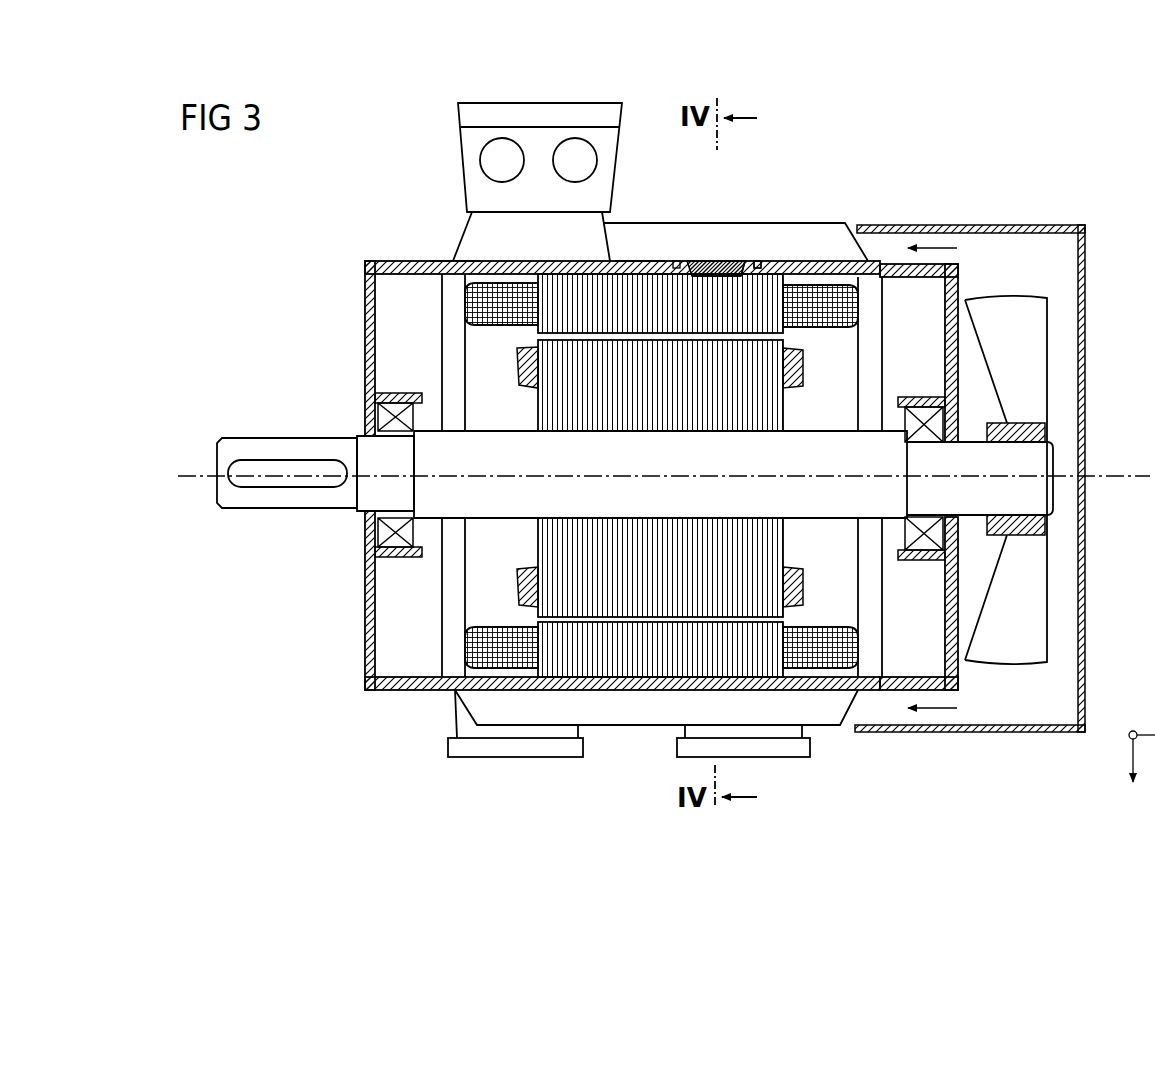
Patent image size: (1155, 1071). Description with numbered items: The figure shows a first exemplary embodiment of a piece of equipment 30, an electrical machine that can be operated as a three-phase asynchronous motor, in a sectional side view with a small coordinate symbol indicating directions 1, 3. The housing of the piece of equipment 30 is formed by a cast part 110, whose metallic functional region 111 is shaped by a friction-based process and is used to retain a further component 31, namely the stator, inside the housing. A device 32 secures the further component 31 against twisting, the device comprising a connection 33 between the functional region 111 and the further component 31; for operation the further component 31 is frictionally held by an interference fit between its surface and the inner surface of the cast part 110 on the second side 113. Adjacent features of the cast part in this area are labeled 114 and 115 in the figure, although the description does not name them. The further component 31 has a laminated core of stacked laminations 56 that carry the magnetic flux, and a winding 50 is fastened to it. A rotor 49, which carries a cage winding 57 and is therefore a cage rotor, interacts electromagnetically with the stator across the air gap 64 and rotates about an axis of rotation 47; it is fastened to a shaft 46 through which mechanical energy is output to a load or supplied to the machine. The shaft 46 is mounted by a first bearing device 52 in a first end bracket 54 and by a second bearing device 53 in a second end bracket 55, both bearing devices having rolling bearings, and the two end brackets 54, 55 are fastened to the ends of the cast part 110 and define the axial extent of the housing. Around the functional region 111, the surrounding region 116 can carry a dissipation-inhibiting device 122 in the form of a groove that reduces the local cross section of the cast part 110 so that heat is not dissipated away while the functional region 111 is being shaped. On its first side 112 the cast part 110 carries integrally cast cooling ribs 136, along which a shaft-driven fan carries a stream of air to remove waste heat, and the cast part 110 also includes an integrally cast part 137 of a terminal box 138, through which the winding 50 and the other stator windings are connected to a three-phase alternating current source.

The piece of equipment 30 is at (306, 270).
The further component 31 is at (589, 319).
The device for securing against twisting 32 is at (722, 258).
The connection 33 is at (744, 286).
The shaft 46 is at (253, 445).
The axis of rotation 47 is at (182, 475).
The rotor 49 is at (536, 415).
The winding 50 is at (462, 645).
The first bearing device 52 is at (397, 542).
The second bearing device 53 is at (918, 550).
The first end bracket 54 is at (364, 663).
The second end bracket 55 is at (955, 663).
The laminations 56 is at (592, 668).
The cage winding 57 is at (525, 585).
The air gap 64 is at (783, 613).
The cast part 110 is at (443, 256).
The metallic functional region 111 is at (745, 261).
The first side 112 is at (486, 258).
The second side 113 is at (458, 290).
The sensor insert 114 is at (695, 261).
The holding element 115 is at (757, 261).
The surrounding region 116 is at (640, 261).
The dissipation-inhibiting device 122 is at (675, 261).
The cooling ribs 136 is at (840, 230).
The integrally cast part of terminal box 137 is at (505, 227).
The terminal box 138 is at (468, 145).
The axial direction 1 is at (1133, 776).
The radial direction 3 is at (1130, 733).